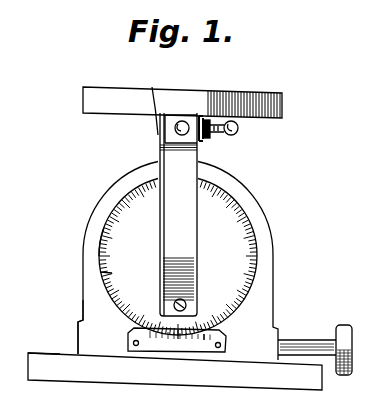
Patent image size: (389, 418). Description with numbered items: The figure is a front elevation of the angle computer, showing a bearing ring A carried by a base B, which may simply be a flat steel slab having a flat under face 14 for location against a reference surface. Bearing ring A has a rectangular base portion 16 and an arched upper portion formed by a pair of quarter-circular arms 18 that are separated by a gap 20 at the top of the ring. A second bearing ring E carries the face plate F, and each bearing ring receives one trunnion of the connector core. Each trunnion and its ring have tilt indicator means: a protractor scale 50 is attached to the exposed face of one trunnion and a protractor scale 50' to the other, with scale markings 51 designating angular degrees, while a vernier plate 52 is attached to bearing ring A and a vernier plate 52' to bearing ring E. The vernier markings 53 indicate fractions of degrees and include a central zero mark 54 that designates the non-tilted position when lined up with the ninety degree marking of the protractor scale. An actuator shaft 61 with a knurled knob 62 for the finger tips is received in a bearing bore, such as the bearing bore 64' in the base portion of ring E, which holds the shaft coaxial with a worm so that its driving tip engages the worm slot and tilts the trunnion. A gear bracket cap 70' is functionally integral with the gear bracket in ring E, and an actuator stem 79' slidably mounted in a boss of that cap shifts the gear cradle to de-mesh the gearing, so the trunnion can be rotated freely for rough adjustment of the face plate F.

The flat under face 14 is at (258, 388).
The rectangular base portion 16 is at (84, 305).
The quarter-circular arms 18 is at (114, 187).
The gap 20 is at (163, 160).
The protractor scale 50 is at (153, 258).
The protractor scale 50' is at (126, 254).
The scale markings 51 is at (100, 250).
The vernier plate 52 is at (170, 367).
The vernier plate 52' is at (151, 102).
The vernier markings 53 is at (203, 352).
The zero mark 54 is at (177, 352).
The actuator shaft 61 is at (300, 345).
The knurled knob 62 is at (342, 328).
The bearing bore 64' is at (157, 129).
The gear bracket cap 70' is at (214, 136).
The actuator stem 79' is at (249, 132).
The bearing ring A is at (278, 262).
The base B is at (36, 346).
The bearing ring E is at (204, 263).
The face plate F is at (193, 92).